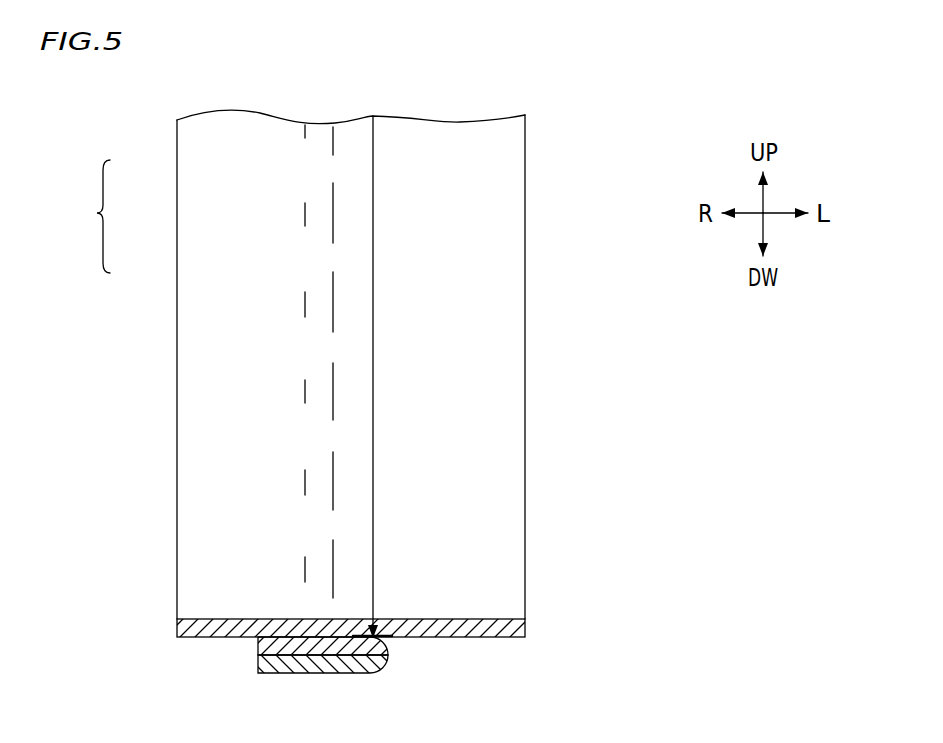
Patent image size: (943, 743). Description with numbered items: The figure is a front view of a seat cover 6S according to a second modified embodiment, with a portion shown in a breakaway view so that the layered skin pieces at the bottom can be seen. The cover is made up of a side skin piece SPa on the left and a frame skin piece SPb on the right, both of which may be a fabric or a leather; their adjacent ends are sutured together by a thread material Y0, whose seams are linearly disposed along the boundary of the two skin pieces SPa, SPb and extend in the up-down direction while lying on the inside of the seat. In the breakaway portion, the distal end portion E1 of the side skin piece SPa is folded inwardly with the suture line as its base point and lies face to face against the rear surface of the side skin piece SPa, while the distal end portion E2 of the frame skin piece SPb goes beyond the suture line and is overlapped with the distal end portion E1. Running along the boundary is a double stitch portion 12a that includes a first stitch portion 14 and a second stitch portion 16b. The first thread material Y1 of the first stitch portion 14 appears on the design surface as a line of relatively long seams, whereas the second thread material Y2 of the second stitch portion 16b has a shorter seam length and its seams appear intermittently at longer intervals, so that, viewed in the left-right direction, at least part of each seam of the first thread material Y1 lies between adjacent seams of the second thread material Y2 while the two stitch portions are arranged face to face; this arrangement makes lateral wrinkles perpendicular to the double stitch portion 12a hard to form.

The seat cover 6S is at (553, 181).
The double stitch portion 12a is at (191, 246).
The second stitch portion 16b is at (302, 211).
The first stitch portion 14 is at (330, 283).
The first thread material Y1 is at (335, 137).
The second thread material Y2 is at (303, 126).
The thread material Y0 is at (381, 640).
The side skin piece SPa is at (197, 481).
The frame skin piece SPb is at (500, 443).
The distal end portion of the side skin piece E1 is at (257, 647).
The distal end portion of the frame skin piece E2 is at (257, 667).